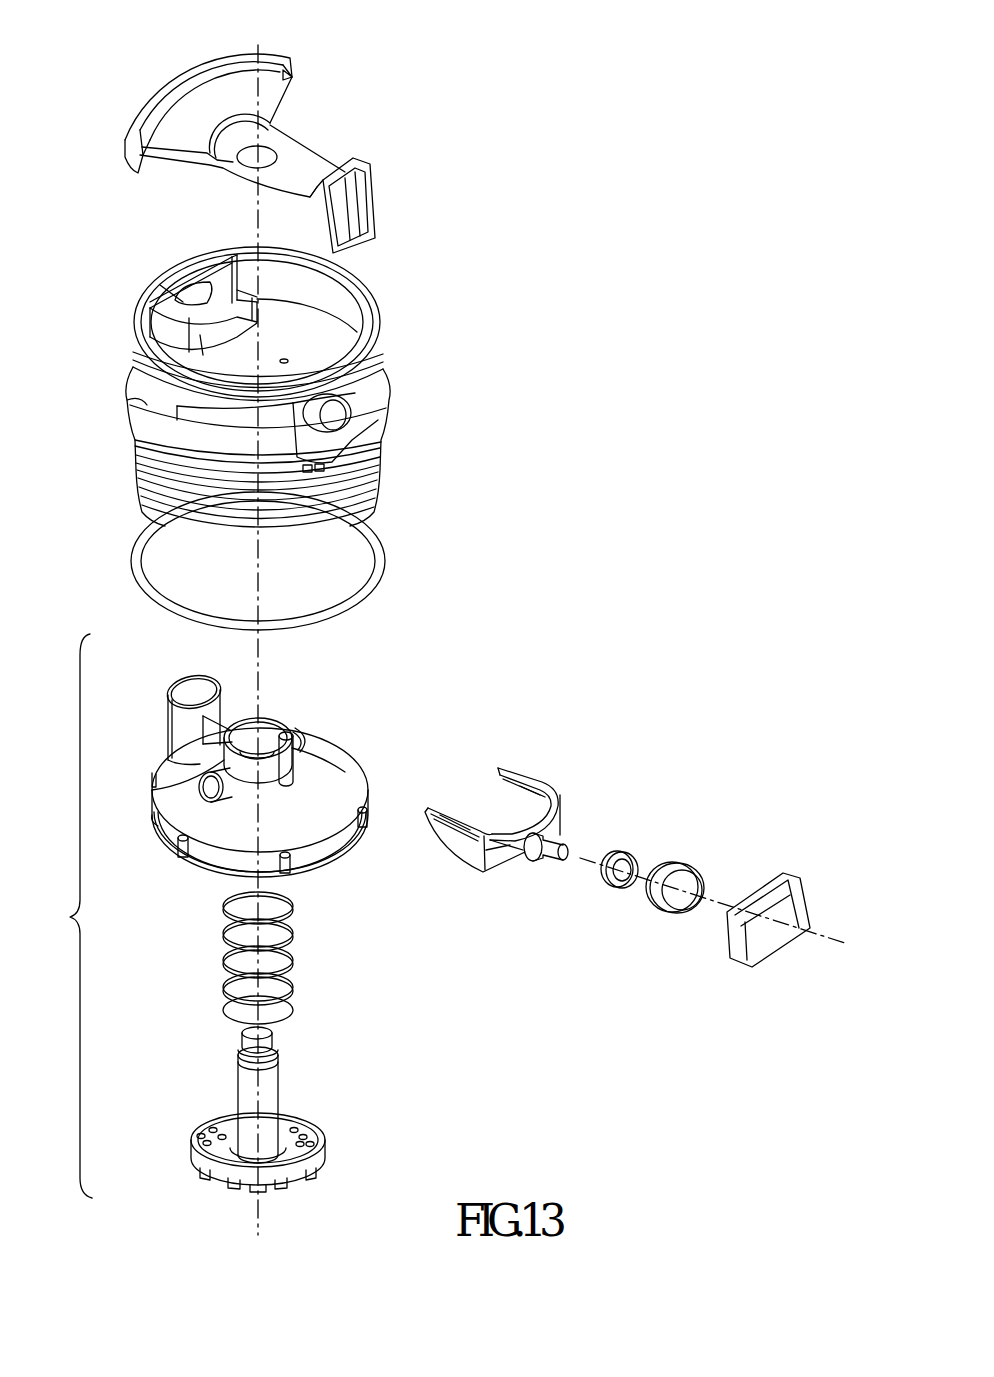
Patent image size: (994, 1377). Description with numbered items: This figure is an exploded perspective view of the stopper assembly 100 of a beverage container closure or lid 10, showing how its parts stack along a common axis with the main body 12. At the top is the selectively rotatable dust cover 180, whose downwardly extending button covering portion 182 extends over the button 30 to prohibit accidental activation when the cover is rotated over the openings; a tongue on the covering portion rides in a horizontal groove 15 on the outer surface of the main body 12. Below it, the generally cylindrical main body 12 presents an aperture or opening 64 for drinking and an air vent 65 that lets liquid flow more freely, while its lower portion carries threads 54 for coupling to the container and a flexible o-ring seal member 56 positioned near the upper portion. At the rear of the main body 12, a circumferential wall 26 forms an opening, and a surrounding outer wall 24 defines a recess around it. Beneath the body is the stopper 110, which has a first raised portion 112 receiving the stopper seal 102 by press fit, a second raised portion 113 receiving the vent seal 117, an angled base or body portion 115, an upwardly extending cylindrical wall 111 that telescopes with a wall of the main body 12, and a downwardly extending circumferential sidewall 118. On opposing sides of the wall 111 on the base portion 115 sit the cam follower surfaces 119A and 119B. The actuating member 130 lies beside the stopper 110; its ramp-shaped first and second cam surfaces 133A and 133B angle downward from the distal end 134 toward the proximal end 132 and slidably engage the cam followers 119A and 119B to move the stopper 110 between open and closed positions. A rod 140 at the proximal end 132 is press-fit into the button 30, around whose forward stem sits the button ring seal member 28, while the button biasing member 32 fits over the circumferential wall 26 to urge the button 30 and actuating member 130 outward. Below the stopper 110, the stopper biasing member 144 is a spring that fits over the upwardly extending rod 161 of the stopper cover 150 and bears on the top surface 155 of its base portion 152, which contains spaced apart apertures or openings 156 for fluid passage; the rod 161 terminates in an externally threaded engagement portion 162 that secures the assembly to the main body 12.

The beverage container closure or lid 10 is at (681, 196).
The main body 12 is at (428, 344).
The groove 15 is at (150, 373).
The outer wall 24 is at (330, 445).
The circumferential wall 26 is at (355, 478).
The button ring seal member 28 is at (628, 855).
The button 30 is at (793, 910).
The button biasing member 32 is at (683, 870).
The threads 54 is at (210, 520).
The o-ring seal member 56 is at (378, 530).
The aperture or opening 64 is at (195, 297).
The air vent 65 is at (288, 358).
The stopper assembly 100 is at (55, 916).
The stopper seal 102 is at (210, 680).
The stopper 110 is at (150, 765).
The upwardly extending cylindrical wall 111 is at (156, 806).
The first raised portion 112 is at (173, 728).
The second raised portion 113 is at (305, 742).
The angled base or body portion 115 is at (327, 778).
The vent seal 117 is at (282, 730).
The circumferential sidewall 118 is at (323, 850).
The first cam follower surface 119A is at (232, 773).
The second cam follower surface 119B is at (305, 730).
The actuating member 130 is at (569, 770).
The proximal end 132 is at (508, 860).
The first cam surface 133A is at (440, 835).
The second cam surface 133B is at (510, 800).
The distal end 134 is at (500, 768).
The rod 140 is at (565, 842).
The stopper biasing member 144 is at (316, 953).
The stopper cover 150 is at (334, 1112).
The base portion 152 is at (325, 1150).
The top surface 155 is at (225, 1145).
The apertures or openings 156 is at (222, 1130).
The rod 161 is at (268, 1085).
The engagement portion 162 is at (280, 1050).
The dust cover 180 is at (128, 78).
The button covering portion 182 is at (360, 211).